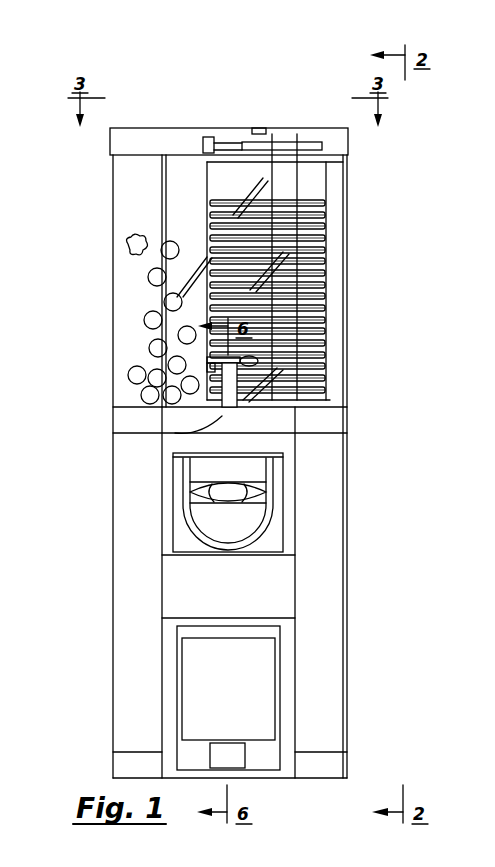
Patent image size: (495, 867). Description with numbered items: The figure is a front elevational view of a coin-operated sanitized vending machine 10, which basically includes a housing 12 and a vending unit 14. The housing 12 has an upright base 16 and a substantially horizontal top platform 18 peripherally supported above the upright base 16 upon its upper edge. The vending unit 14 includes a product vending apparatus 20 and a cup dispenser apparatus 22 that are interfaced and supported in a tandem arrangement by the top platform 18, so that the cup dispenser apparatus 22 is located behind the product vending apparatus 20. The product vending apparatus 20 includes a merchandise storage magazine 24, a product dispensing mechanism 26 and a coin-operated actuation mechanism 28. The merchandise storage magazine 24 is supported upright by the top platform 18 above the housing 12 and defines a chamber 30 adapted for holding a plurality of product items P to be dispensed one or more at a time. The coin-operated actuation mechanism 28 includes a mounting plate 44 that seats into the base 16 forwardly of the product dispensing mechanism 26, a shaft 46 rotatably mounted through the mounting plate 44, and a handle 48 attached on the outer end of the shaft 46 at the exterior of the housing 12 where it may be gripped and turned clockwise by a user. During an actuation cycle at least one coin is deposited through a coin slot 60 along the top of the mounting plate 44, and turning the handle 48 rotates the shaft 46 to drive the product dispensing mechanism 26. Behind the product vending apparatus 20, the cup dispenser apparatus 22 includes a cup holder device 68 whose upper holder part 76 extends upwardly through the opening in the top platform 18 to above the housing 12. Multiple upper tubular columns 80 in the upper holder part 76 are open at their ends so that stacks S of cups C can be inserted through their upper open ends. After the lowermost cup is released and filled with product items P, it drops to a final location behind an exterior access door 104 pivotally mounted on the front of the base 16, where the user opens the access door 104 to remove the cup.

The sanitized vending machine 10 is at (268, 108).
The housing 12 is at (358, 528).
The vending unit 14 is at (96, 210).
The upright base 16 is at (347, 621).
The top platform 18 is at (343, 424).
The product vending apparatus 20 is at (226, 412).
The cup dispenser apparatus 22 is at (360, 381).
The merchandise storage magazine 24 is at (98, 300).
The product dispensing mechanism 26 is at (257, 402).
The coin-operated actuation mechanism 28 is at (180, 524).
The chamber 30 is at (127, 250).
The mounting plate 44 is at (283, 497).
The shaft 46 is at (188, 501).
The handle 48 is at (196, 492).
The coin slot 60 is at (227, 455).
The cup holder device 68 is at (338, 318).
The upper holder part 76 is at (192, 175).
The upper tubular columns 80 is at (207, 190).
The exterior access door 104 is at (246, 702).
The product items P is at (158, 345).
The stack S is at (227, 203).
The cups C is at (230, 241).